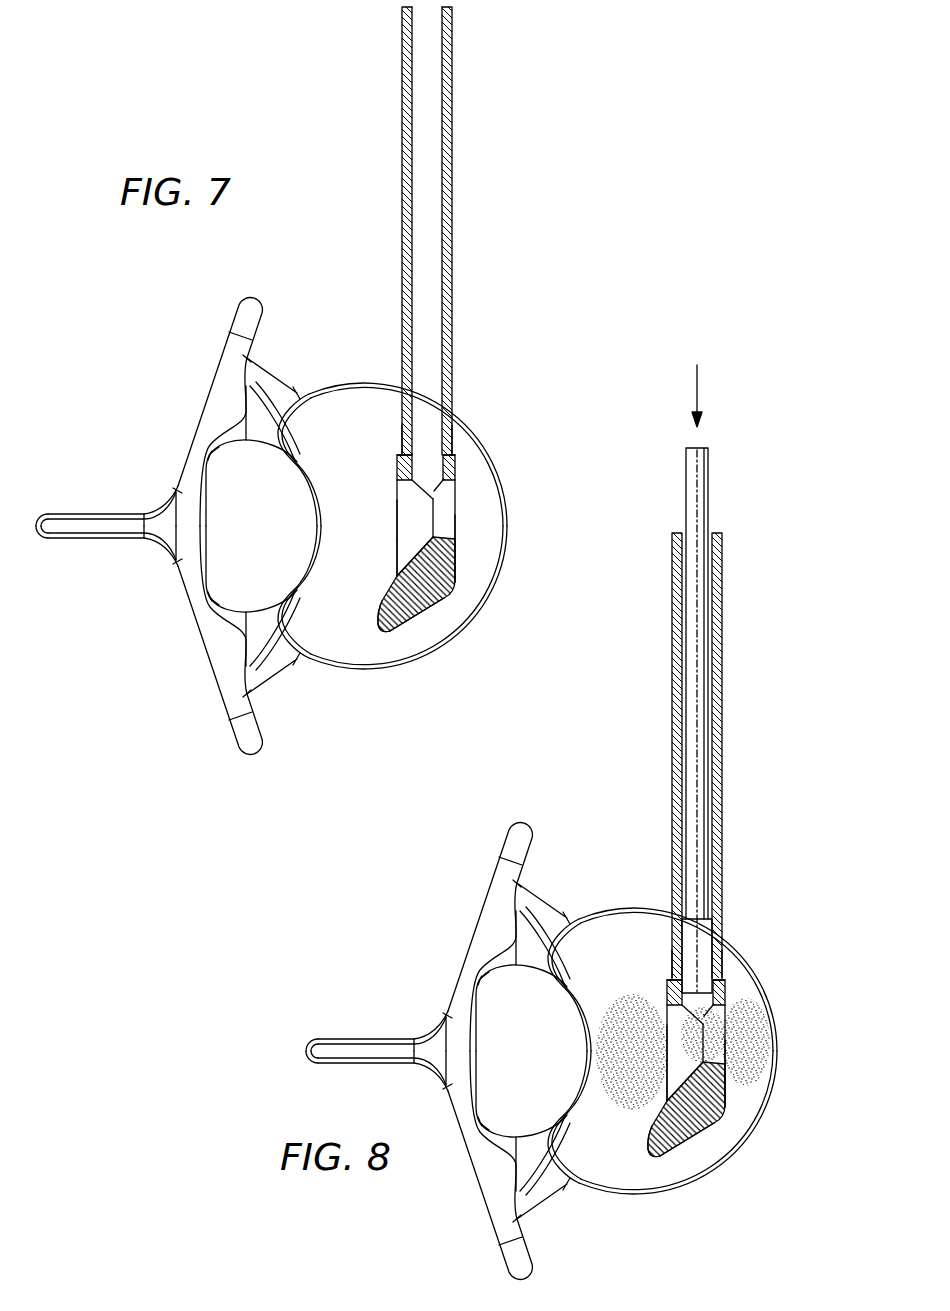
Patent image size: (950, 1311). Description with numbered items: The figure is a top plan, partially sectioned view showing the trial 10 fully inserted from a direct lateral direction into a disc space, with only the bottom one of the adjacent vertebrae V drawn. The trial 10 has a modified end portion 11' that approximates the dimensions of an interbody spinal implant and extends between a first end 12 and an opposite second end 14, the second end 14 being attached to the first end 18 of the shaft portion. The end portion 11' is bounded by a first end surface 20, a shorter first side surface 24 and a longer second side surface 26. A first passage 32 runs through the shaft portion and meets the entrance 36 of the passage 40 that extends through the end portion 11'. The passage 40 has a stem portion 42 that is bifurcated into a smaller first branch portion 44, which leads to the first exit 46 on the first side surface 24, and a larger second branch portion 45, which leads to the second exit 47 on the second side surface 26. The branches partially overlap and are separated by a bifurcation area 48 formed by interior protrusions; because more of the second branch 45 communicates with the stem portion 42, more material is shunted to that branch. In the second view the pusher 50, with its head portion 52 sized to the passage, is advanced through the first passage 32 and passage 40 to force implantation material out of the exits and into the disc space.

In FIG. 7, the trial 10 is at (453, 302).
In FIG. 8, the trial 10 is at (723, 708).
In FIG. 7, the end portion 11' is at (451, 572).
In FIG. 8, the end portion 11' is at (721, 1118).
In FIG. 7, the first end 12 is at (437, 615).
In FIG. 8, the first end 12 is at (677, 1153).
In FIG. 7, the second end 14 is at (456, 462).
In FIG. 8, the second end 14 is at (728, 995).
In FIG. 7, the first end of shaft portion 18 is at (447, 435).
In FIG. 8, the first end of shaft portion 18 is at (718, 968).
In FIG. 7, the first end surface 20 is at (404, 623).
In FIG. 8, the first end surface 20 is at (660, 1153).
In FIG. 7, the first side surface 24 is at (456, 577).
In FIG. 8, the first side surface 24 is at (725, 1075).
In FIG. 7, the second side surface 26 is at (400, 580).
In FIG. 8, the second side surface 26 is at (668, 1100).
In FIG. 7, the first passage 32 is at (428, 237).
In FIG. 7, the entrance 36 is at (421, 458).
In FIG. 8, the entrance 36 is at (692, 1014).
In FIG. 7, the passage 40 is at (454, 468).
In FIG. 8, the passage 40 is at (726, 1103).
In FIG. 7, the stem portion 42 is at (418, 470).
In FIG. 8, the stem portion 42 is at (690, 1000).
In FIG. 7, the first branch portion 44 is at (434, 515).
In FIG. 8, the first branch portion 44 is at (704, 1032).
In FIG. 7, the second branch portion 45 is at (407, 522).
In FIG. 8, the second branch portion 45 is at (677, 1043).
In FIG. 7, the first exit 46 is at (451, 531).
In FIG. 8, the first exit 46 is at (722, 1057).
In FIG. 7, the second exit 47 is at (400, 553).
In FIG. 8, the second exit 47 is at (670, 1074).
In FIG. 7, the bifurcation area 48 is at (452, 492).
In FIG. 8, the bifurcation area 48 is at (708, 1010).
In FIG. 8, the pusher 50 is at (700, 672).
In FIG. 8, the head portion 52 is at (704, 933).
In FIG. 7, the vertebrae V is at (348, 637).
In FIG. 8, the vertebrae V is at (625, 1180).